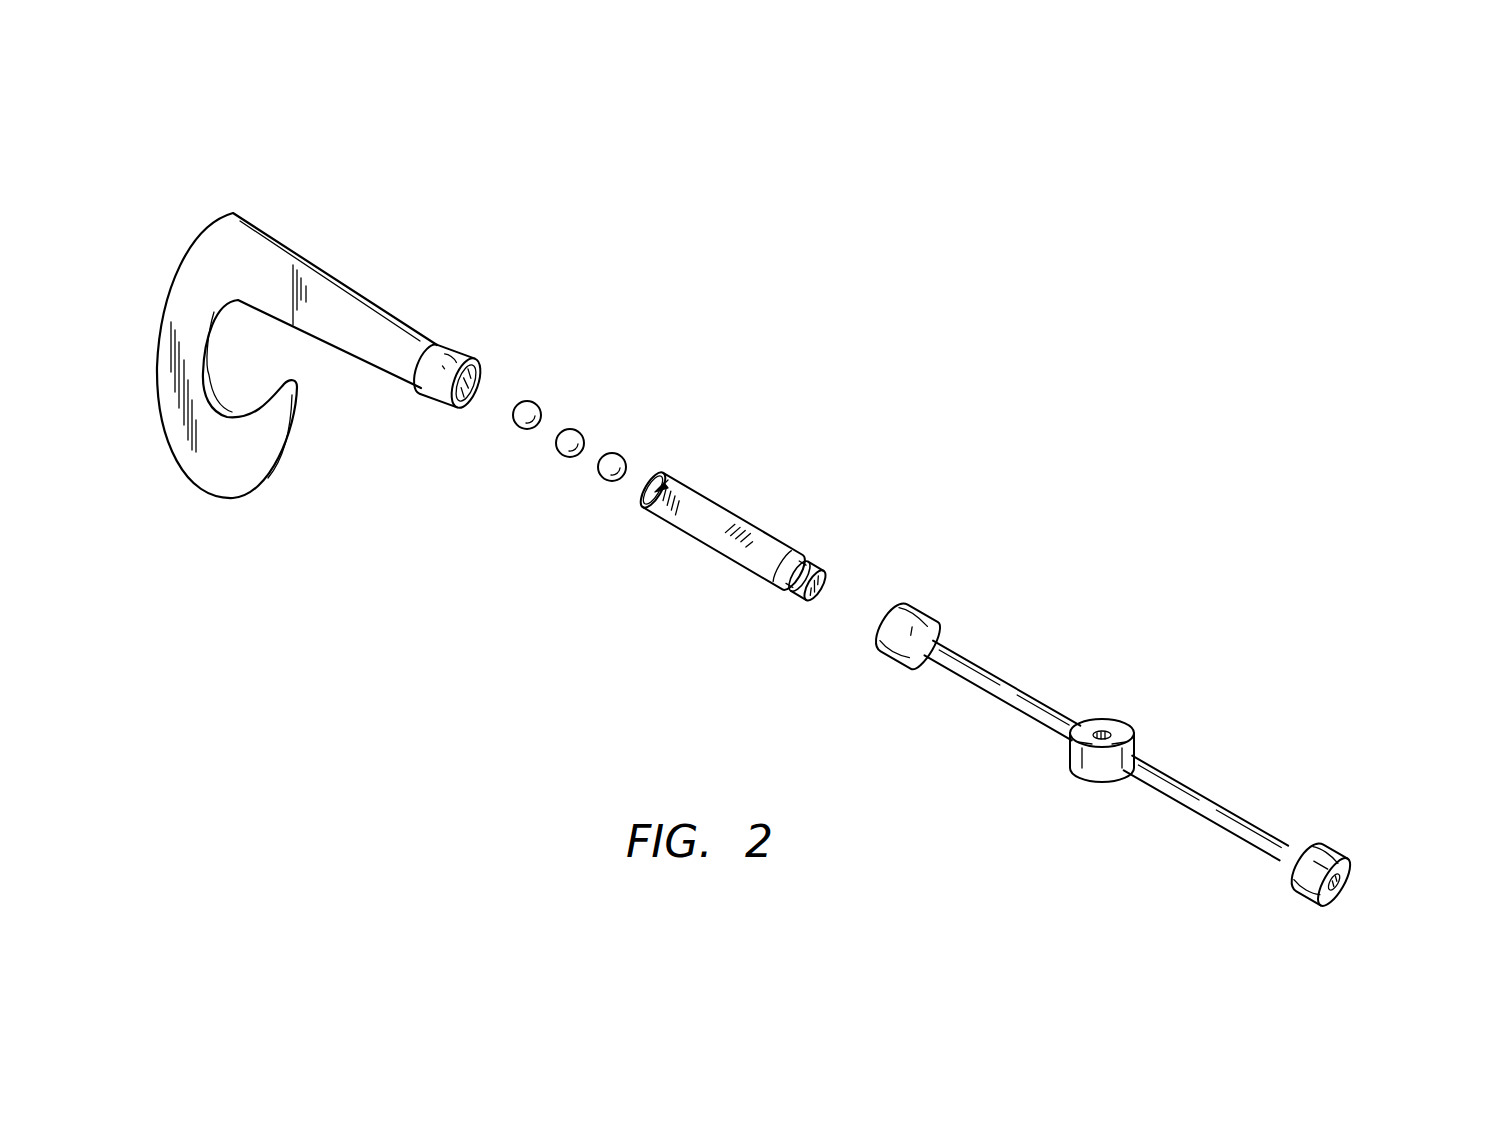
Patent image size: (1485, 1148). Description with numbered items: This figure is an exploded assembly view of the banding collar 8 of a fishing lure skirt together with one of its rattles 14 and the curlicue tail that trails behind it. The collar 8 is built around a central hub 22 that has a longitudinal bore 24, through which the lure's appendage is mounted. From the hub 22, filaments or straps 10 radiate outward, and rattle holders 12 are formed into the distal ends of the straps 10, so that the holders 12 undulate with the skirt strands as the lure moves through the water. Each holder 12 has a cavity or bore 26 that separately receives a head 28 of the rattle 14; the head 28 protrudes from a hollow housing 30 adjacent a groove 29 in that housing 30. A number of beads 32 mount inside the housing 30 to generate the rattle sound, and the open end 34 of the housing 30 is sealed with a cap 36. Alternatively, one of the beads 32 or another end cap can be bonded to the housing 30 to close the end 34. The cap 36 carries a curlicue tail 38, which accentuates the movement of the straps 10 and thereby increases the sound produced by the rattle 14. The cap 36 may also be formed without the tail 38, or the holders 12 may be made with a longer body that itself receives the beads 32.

The collar 8 is at (1130, 712).
The straps 10 is at (988, 663).
The rattle holders 12 is at (915, 602).
The rattle 14 is at (742, 501).
The central hub 22 is at (1067, 765).
The longitudinal bore 24 is at (1100, 730).
The bore 26 is at (1357, 880).
The head 28 is at (827, 573).
The groove 29 is at (787, 592).
The hollow housing 30 is at (710, 547).
The beads 32 is at (618, 450).
The open end 34 is at (688, 468).
The cap 36 is at (457, 350).
The curlicue tail 38 is at (197, 473).